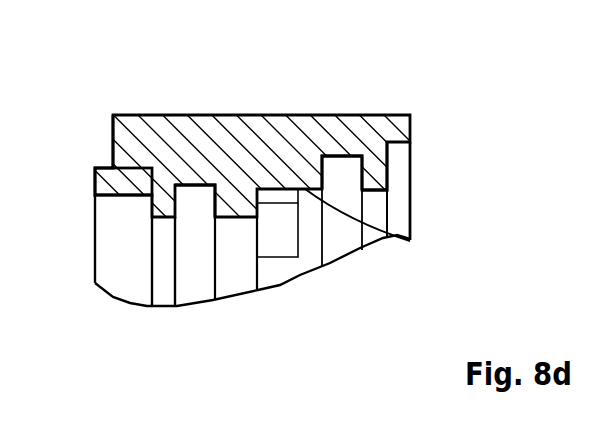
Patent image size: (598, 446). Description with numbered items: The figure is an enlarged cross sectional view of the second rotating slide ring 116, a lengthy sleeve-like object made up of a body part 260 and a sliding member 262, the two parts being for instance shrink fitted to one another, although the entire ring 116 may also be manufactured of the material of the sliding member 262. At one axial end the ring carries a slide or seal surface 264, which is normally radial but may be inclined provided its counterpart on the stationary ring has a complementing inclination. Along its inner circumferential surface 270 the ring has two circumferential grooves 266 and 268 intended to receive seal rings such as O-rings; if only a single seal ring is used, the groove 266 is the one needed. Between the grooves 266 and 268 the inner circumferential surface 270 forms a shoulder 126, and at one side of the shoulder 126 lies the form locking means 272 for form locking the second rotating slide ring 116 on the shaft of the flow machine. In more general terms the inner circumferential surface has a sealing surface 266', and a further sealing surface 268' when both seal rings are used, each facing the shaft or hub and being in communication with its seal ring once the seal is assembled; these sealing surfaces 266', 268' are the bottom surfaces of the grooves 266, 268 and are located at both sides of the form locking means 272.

The second rotating slide ring 116 is at (362, 93).
The body part 260 is at (272, 152).
The sliding member 262 is at (116, 150).
The slide or seal surface 264 is at (95, 168).
The circumferential groove 266 is at (453, 187).
The sealing surface 266' is at (428, 173).
The circumferential groove 268 is at (116, 242).
The sealing surface 268' is at (92, 245).
The inner circumferential surface 270 is at (410, 241).
The shoulder 126 is at (298, 193).
The form locking means 272 is at (278, 237).